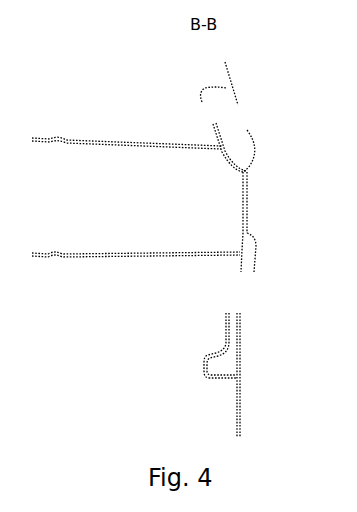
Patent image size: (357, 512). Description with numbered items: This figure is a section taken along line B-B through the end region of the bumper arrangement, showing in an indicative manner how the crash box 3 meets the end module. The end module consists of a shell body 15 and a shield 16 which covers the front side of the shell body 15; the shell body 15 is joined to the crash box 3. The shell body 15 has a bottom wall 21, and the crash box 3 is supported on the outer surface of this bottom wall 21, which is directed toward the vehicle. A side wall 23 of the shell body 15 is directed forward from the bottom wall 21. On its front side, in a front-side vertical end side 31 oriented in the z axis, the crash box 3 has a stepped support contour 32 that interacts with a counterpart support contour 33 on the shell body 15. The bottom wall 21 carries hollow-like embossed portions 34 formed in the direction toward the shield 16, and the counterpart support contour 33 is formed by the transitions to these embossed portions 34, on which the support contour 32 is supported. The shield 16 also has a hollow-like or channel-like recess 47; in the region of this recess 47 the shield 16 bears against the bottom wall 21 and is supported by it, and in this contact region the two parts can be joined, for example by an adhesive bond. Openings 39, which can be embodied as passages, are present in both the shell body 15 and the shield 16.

The crash box 3 is at (100, 139).
The shell body 15 is at (201, 100).
The shield 16 is at (237, 86).
The counterpart support contour 33 is at (222, 158).
The hollow-like or channel-like recess 47 is at (113, 275).
The bottom wall 21 is at (203, 368).
The embossed portion 34 is at (237, 213).
The front-side vertical end side 31 is at (233, 243).
The stepped support contour 32 is at (230, 261).
The opening 39 is at (245, 303).
The side wall 23 is at (220, 383).